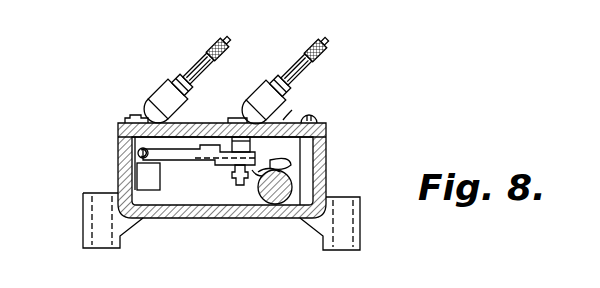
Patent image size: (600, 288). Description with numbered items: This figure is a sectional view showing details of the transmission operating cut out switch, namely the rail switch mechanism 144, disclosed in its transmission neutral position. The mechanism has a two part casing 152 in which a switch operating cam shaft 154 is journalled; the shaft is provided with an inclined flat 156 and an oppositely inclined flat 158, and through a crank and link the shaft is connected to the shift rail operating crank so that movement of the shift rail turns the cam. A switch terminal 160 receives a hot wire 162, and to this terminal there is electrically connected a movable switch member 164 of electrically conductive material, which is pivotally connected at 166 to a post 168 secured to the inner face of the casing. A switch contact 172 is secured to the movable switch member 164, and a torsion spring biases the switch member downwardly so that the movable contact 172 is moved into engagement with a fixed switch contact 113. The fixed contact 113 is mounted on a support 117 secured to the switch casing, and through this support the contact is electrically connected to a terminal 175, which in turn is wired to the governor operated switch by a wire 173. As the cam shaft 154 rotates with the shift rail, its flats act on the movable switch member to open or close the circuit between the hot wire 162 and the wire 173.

The fixed switch contact 113 is at (240, 172).
The support 117 is at (257, 178).
The rail switch mechanism 144 is at (338, 106).
The two part casing 152 is at (200, 217).
The switch operating cam shaft 154 is at (298, 190).
The inclined flat 156 is at (285, 180).
The oppositely inclined flat 158 is at (292, 165).
The switch terminal 160 is at (157, 87).
The hot wire 162 is at (206, 50).
The movable switch member 164 is at (185, 157).
The pivotal connection 166 is at (138, 155).
The post 168 is at (146, 185).
The switch contact 172 is at (232, 178).
The wire 173 is at (305, 49).
The terminal 175 is at (300, 82).